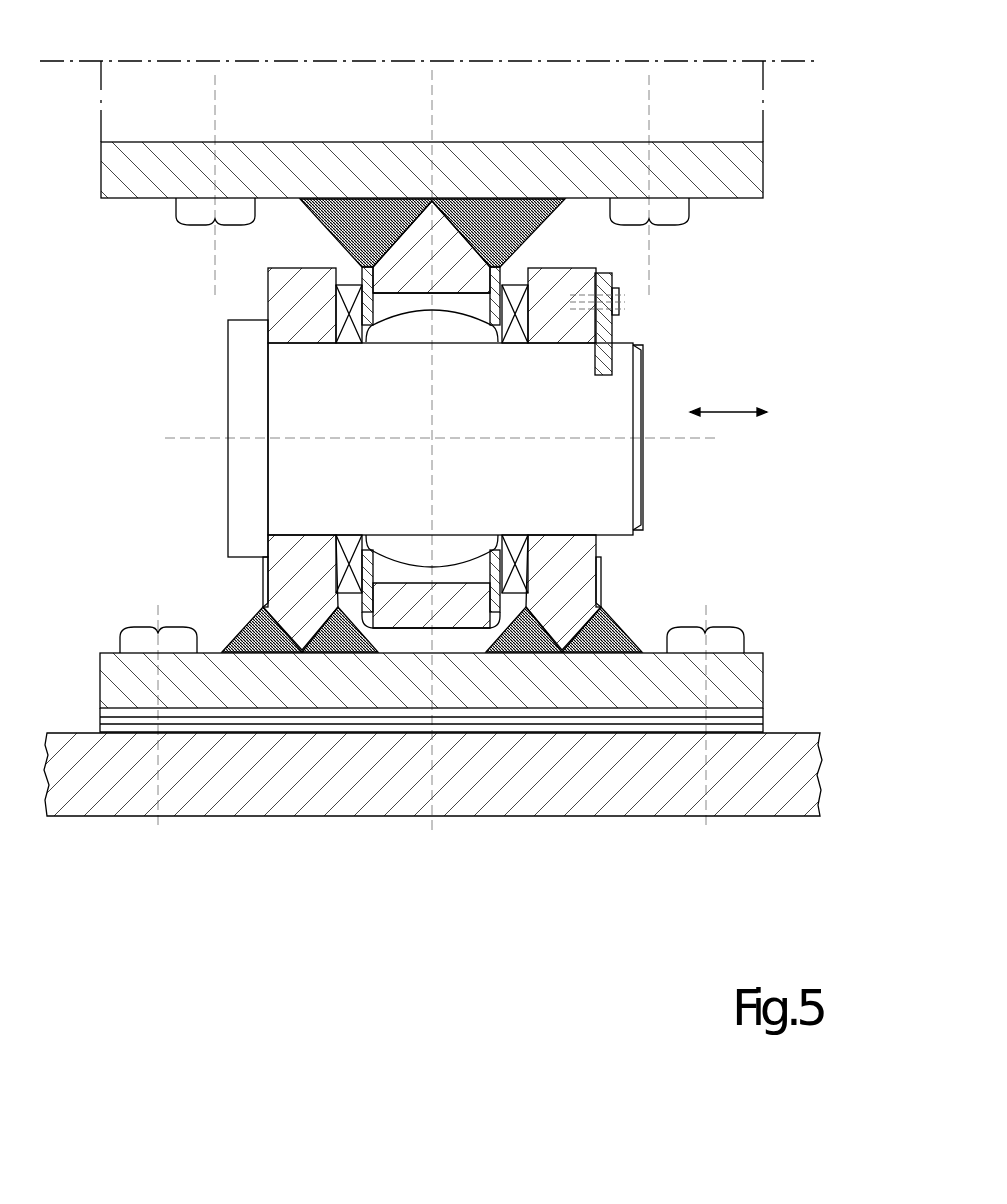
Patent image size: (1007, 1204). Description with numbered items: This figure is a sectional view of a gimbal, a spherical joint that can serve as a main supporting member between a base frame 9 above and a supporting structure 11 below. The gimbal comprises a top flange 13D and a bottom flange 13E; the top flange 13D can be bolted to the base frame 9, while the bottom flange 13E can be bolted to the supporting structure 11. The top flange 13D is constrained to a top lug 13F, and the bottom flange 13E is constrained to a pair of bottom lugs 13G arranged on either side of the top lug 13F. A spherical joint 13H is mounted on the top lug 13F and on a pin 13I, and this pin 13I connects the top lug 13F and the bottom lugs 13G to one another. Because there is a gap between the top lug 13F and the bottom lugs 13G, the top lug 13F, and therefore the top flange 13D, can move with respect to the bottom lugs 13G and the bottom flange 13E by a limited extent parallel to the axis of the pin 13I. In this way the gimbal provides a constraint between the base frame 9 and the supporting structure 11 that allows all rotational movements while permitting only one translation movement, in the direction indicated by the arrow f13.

The base frame 9 is at (758, 108).
The supporting structure 11 is at (747, 793).
The top flange 13D is at (752, 172).
The bottom flange 13E is at (752, 683).
The top lug 13F is at (520, 238).
The bottom lugs 13G is at (288, 573).
The spherical joint 13H is at (445, 555).
The pin 13I is at (613, 397).
The arrow f13 is at (729, 412).